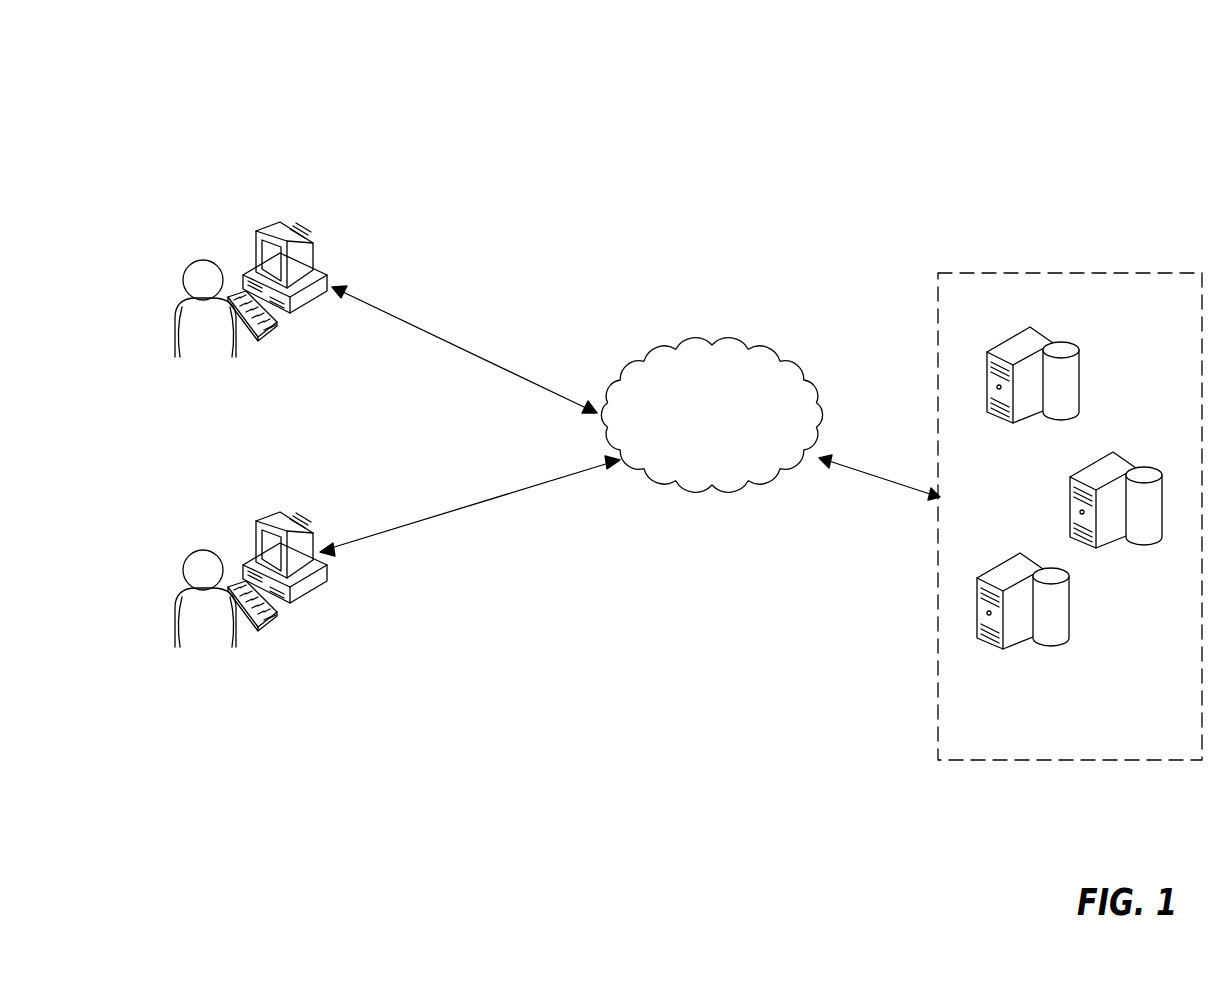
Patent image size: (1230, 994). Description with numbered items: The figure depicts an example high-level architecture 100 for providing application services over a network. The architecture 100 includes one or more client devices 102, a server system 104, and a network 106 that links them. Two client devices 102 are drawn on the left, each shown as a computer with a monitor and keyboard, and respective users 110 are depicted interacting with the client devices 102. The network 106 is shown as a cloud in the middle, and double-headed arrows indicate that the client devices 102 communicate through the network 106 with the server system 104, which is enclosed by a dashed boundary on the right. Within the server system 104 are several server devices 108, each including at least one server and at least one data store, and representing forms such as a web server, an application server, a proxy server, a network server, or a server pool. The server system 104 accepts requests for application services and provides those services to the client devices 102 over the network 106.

The architecture 100 is at (560, 104).
The client device 102 is at (250, 232).
The server system 104 is at (1072, 273).
The network 106 is at (714, 345).
The server device 108 is at (1080, 362).
The user 110 is at (203, 358).